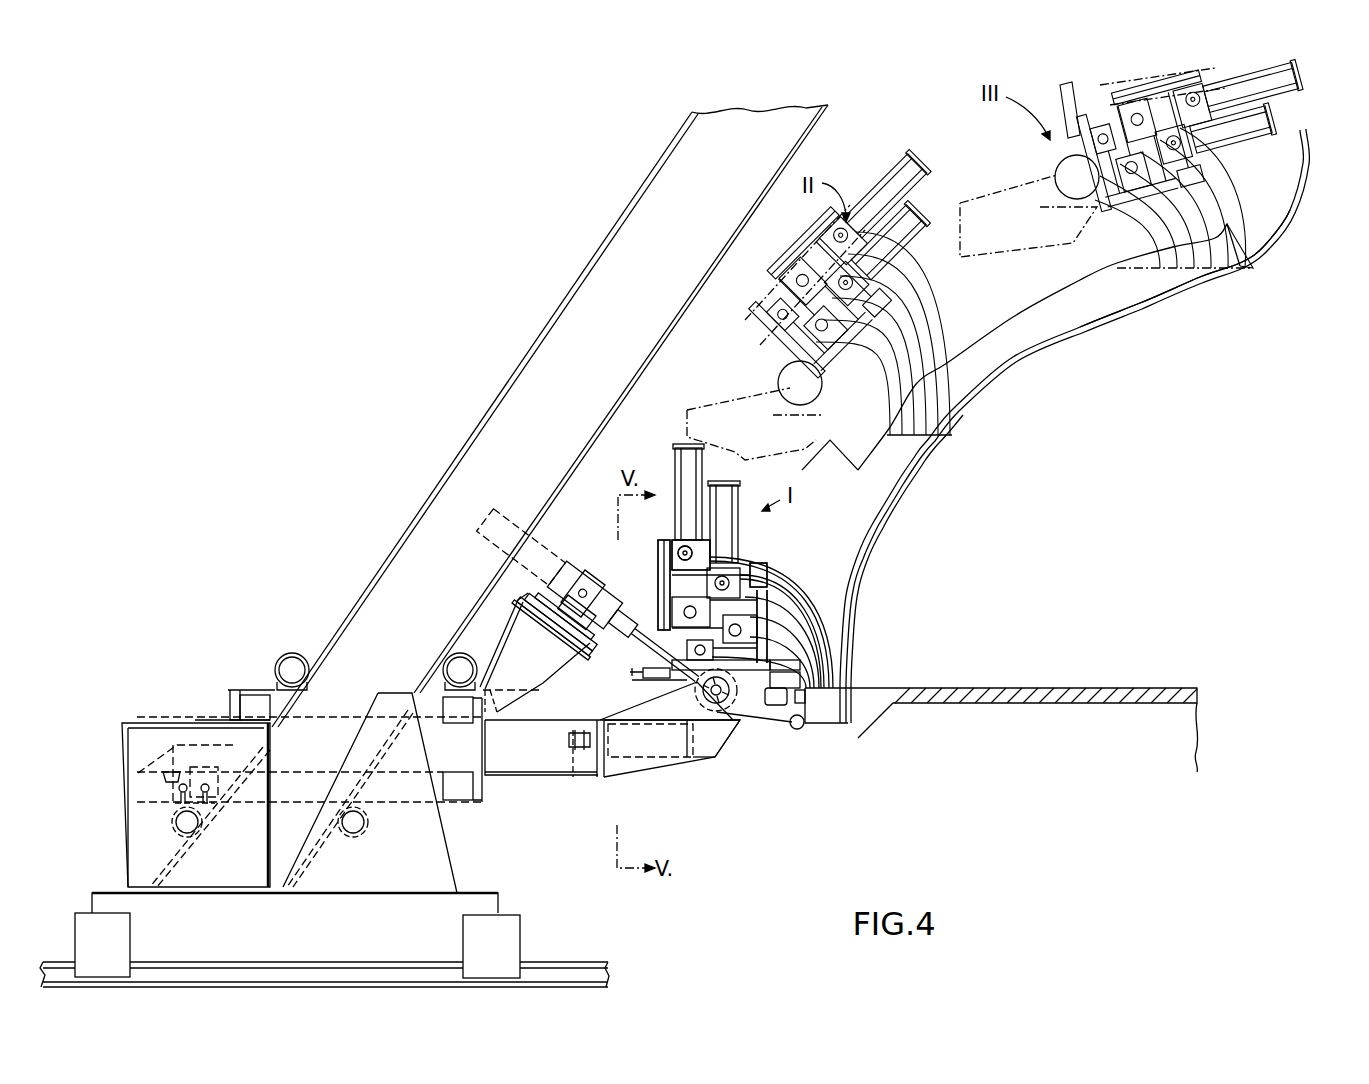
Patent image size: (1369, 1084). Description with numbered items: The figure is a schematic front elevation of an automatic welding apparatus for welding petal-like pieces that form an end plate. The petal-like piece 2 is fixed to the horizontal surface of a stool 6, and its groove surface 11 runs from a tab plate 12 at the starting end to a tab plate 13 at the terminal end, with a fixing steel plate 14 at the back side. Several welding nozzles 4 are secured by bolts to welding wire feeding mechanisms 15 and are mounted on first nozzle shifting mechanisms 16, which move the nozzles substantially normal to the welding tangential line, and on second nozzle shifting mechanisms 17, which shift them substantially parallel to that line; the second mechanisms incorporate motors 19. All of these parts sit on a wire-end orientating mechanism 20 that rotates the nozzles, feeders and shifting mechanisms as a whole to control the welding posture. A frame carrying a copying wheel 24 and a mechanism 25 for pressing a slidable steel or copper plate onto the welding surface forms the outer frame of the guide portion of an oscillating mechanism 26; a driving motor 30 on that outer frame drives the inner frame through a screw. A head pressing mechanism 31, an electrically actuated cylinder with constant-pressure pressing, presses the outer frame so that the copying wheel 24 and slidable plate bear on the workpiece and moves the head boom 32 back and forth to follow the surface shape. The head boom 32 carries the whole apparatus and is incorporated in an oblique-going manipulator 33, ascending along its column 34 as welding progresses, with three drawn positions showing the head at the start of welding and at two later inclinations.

The petal-like piece 2 is at (878, 490).
The welding nozzle 4 is at (835, 653).
The stool 6 is at (985, 688).
The groove surface 11 is at (968, 372).
The tab plate at the starting end 12 is at (830, 718).
The tab plate at the terminal end 13 is at (1135, 282).
The fixing steel plate 14 is at (918, 450).
The welding wire feeding mechanism 15 is at (692, 553).
The first nozzle shifting mechanism 16 is at (632, 680).
The second nozzle shifting mechanism 17 is at (660, 612).
The motor 19 is at (768, 567).
The wire-end orientating mechanism 20 is at (727, 745).
The copying wheel 24 is at (795, 730).
The mechanism for pressing a slidable plate 25 is at (826, 712).
The oscillating mechanism 26 is at (660, 755).
The driving motor 30 is at (574, 750).
The head pressing mechanism 31 is at (579, 590).
The head boom 32 is at (524, 778).
The oblique-going manipulator 33 is at (484, 893).
The column 34 is at (504, 410).